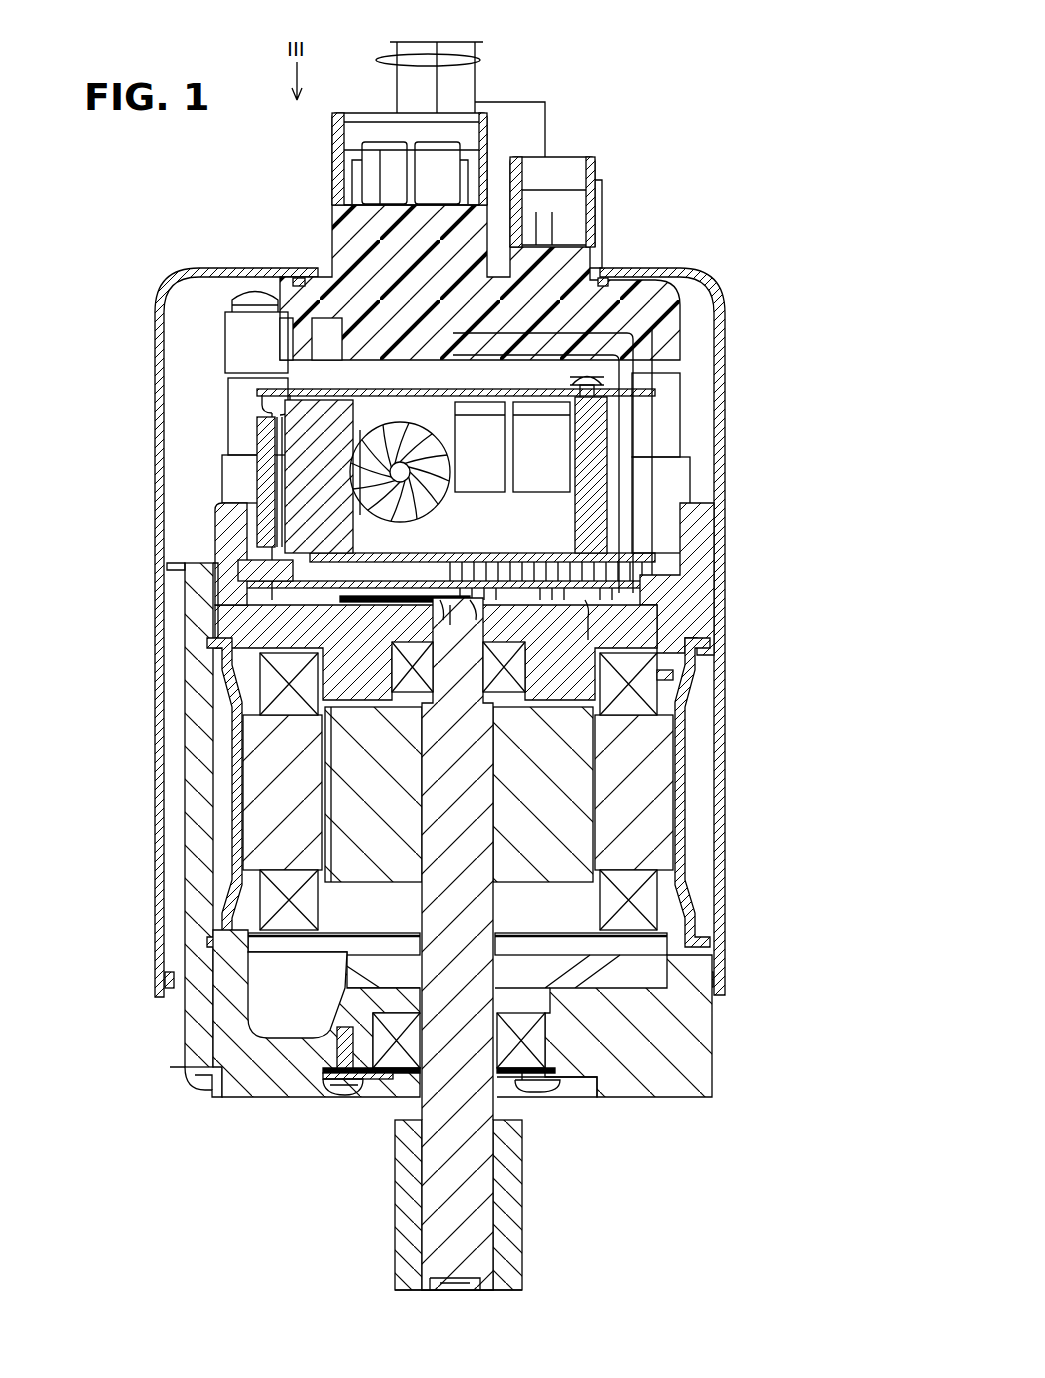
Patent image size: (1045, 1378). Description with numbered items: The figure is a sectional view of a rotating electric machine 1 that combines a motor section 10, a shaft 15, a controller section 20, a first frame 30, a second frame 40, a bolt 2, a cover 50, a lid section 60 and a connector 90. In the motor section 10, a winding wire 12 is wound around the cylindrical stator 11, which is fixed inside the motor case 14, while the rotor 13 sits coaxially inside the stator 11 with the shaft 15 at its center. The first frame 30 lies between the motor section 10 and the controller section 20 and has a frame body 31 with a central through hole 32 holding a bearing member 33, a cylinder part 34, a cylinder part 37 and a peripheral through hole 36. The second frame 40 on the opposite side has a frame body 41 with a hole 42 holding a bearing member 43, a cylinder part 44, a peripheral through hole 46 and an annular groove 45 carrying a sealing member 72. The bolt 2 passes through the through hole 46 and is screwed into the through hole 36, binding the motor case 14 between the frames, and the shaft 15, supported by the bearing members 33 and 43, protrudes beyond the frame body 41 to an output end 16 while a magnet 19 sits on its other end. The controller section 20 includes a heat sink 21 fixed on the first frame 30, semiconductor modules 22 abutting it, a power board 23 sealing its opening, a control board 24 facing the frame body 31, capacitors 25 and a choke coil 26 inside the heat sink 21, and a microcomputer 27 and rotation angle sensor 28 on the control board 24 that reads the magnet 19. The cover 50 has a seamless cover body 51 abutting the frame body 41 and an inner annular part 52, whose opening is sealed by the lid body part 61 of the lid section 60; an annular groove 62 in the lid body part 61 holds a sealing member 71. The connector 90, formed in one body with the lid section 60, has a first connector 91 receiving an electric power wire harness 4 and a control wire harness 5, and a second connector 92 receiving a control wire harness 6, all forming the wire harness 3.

The rotating electric machine 1 is at (694, 85).
The bolt 2 is at (192, 757).
The wire harness 3 is at (480, 62).
The electric power wire harness 4 is at (397, 70).
The control wire harness 5 is at (397, 90).
The control wire harness 6 is at (477, 77).
The motor section 10 is at (527, 940).
The stator 11 is at (660, 768).
The winding wire 12 is at (640, 886).
The rotor 13 is at (580, 830).
The motor case 14 is at (686, 800).
The shaft 15 is at (483, 906).
The output end 16 is at (510, 1225).
The magnet 19 is at (466, 640).
The controller section 20 is at (477, 446).
The heat sink 21 is at (290, 437).
The semiconductor module 22 is at (262, 466).
The power board 23 is at (550, 400).
The control board 24 is at (588, 590).
The capacitor 25 is at (482, 487).
The choke coil 26 is at (450, 455).
The microcomputer 27 is at (355, 602).
The rotation angle sensor 28 is at (448, 622).
The first frame 30 is at (453, 601).
The frame body 31 is at (705, 622).
The through hole 32 is at (540, 627).
The bearing member 33 is at (392, 672).
The cylinder part 34 is at (683, 678).
The through hole 36 is at (188, 603).
The cylinder part 37 is at (225, 519).
The second frame 40 is at (507, 1049).
The frame body 41 is at (700, 1068).
The hole 42 is at (543, 1050).
The bearing member 43 is at (340, 1032).
The cylinder part 44 is at (235, 910).
The annular groove 45 is at (168, 980).
The through hole 46 is at (213, 1028).
The cover 50 is at (482, 593).
The cover body 51 is at (722, 488).
The inner annular part 52 is at (228, 268).
The lid section 60 is at (533, 282).
The lid body part 61 is at (683, 330).
The annular groove 62 is at (298, 278).
The sealing member 71 is at (603, 278).
The sealing member 72 is at (713, 980).
The connector 90 is at (358, 157).
The first connector 91 is at (344, 160).
The second connector 92 is at (595, 167).